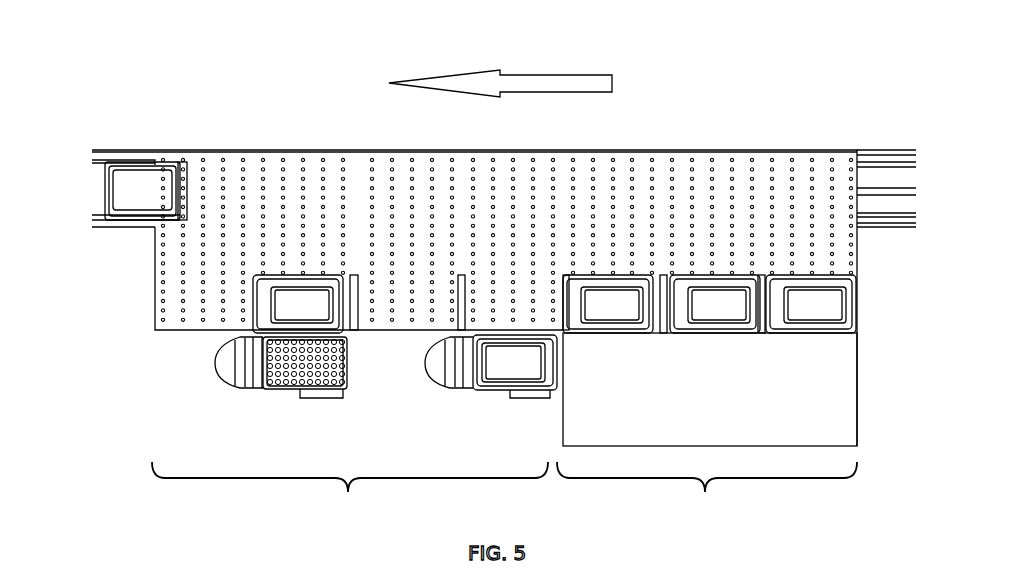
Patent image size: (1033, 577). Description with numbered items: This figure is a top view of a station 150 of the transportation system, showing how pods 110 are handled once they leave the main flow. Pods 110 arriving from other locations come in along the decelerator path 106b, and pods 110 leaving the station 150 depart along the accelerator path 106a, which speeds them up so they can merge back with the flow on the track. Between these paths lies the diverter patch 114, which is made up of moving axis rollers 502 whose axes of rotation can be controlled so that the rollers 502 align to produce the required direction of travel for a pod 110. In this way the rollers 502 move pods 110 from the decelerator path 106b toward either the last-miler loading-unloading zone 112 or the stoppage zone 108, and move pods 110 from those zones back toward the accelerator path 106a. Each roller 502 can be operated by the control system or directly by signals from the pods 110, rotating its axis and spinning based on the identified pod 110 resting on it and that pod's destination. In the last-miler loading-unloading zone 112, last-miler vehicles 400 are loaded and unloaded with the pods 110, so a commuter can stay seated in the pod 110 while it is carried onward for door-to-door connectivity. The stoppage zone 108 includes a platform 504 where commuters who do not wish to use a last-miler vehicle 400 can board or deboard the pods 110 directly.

The station 150 is at (224, 58).
The diverter patch 114 is at (713, 150).
The accelerator path 106a is at (125, 228).
The decelerator path 106b is at (872, 228).
The pod 110 is at (290, 316).
The last-miler connectivity vehicle 400 is at (258, 390).
The moving axis roller 502 is at (410, 312).
The platform 504 is at (820, 388).
The last-miler loading-unloading zone 112 is at (350, 491).
The stoppage zone 108 is at (707, 491).